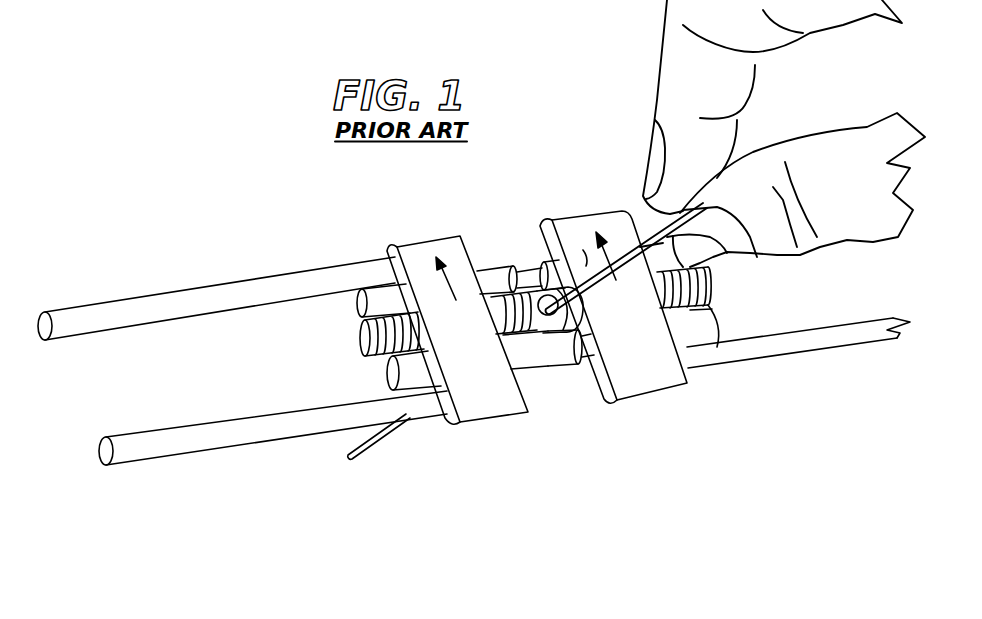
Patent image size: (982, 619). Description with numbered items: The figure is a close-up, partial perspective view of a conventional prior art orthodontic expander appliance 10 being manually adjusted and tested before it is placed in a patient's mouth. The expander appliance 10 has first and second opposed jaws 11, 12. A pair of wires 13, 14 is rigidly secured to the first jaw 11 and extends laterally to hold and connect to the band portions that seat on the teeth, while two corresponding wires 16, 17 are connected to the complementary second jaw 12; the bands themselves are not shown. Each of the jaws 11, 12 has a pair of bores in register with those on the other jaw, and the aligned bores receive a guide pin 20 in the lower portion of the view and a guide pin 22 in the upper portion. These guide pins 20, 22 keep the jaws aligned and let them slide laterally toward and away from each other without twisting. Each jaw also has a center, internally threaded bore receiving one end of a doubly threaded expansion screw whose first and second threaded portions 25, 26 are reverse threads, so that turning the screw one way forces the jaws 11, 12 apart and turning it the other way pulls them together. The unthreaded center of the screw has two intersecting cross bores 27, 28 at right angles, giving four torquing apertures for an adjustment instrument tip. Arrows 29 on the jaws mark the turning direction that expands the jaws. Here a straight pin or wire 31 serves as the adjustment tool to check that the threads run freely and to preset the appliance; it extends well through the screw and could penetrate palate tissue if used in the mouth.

The expander appliance 10 is at (556, 470).
The first jaw 11 is at (487, 413).
The second jaw 12 is at (647, 380).
The wire 13 is at (68, 338).
The wire 14 is at (190, 425).
The wire 16 is at (730, 253).
The wire 17 is at (823, 353).
The guide pin 20 is at (417, 377).
The guide pin 22 is at (500, 267).
The first threaded portion 25 is at (362, 343).
The second threaded portion 26 is at (703, 293).
The cross bore 27 is at (590, 313).
The cross bore 28 is at (562, 368).
The arrows 29 is at (432, 264).
The straight pin 31 is at (587, 257).